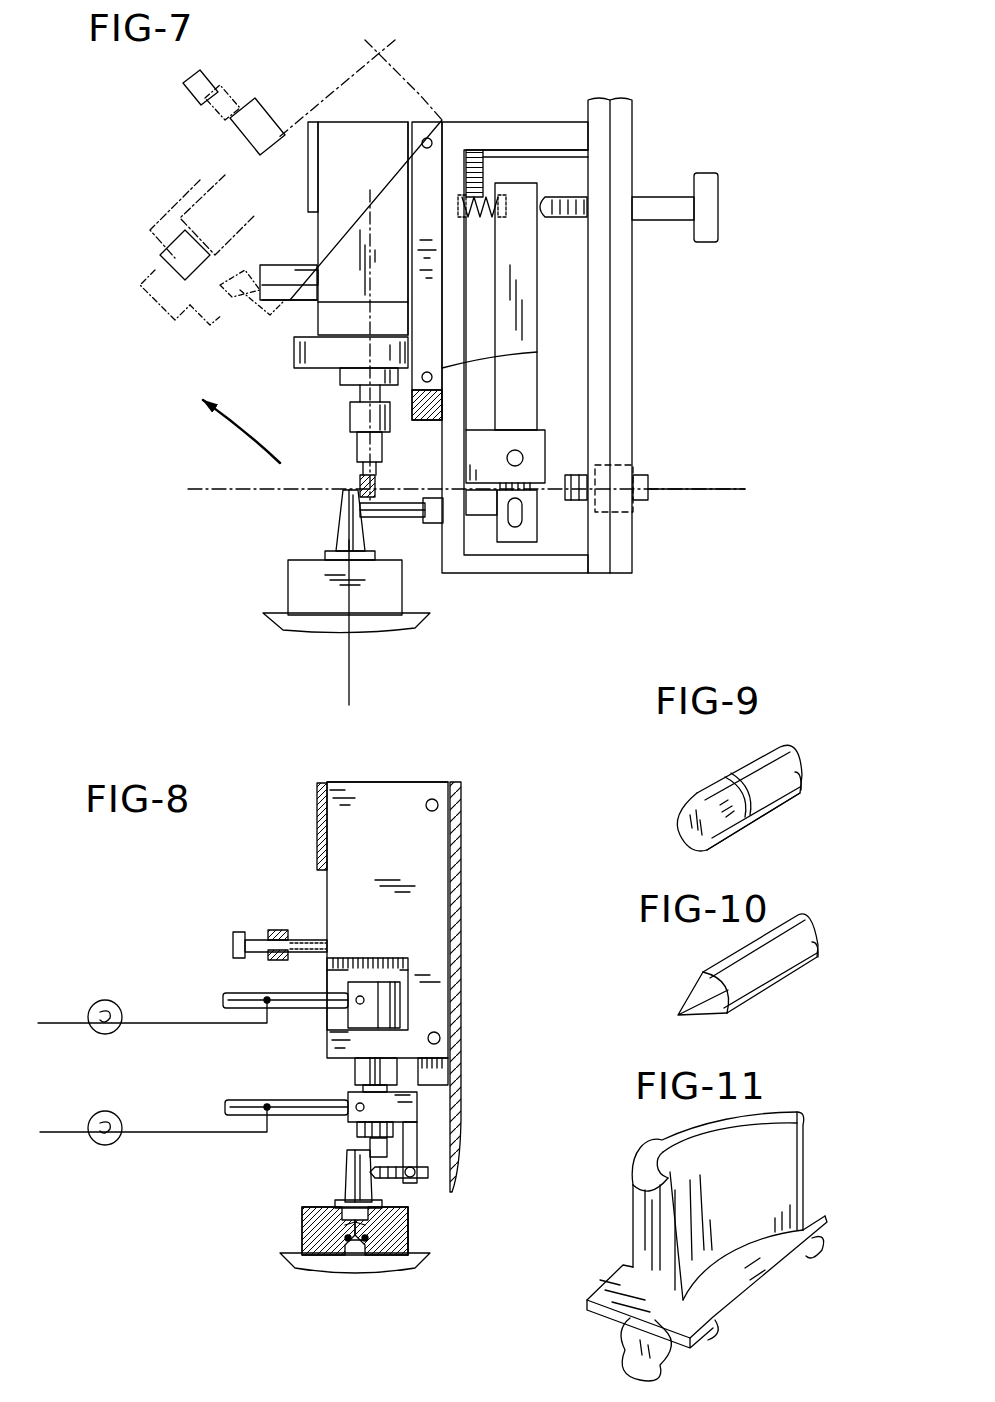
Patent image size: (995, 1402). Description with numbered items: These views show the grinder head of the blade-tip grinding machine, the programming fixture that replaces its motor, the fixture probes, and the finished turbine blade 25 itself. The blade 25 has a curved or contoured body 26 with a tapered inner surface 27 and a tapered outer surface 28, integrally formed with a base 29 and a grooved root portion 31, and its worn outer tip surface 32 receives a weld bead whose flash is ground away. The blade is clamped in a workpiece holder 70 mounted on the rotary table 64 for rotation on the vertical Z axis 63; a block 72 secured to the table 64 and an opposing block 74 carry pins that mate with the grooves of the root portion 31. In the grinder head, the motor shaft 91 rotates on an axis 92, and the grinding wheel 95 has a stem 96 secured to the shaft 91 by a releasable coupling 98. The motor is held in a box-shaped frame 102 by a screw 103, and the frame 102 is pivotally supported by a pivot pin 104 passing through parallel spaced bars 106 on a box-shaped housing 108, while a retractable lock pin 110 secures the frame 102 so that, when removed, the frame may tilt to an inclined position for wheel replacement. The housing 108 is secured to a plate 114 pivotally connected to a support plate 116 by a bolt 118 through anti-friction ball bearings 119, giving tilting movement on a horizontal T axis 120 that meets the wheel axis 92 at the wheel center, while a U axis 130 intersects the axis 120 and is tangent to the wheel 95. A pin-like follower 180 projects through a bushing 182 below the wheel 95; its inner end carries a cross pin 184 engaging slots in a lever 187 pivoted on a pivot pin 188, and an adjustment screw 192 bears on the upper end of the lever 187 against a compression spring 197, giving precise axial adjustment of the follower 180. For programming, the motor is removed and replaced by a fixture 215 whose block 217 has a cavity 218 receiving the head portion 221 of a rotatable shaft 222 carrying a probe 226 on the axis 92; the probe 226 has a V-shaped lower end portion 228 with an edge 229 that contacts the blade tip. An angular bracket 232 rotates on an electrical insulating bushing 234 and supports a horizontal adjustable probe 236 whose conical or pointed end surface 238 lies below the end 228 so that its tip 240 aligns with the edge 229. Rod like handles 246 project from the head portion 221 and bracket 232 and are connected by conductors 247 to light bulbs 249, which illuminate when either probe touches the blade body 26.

In FIG. 7, the high pressure gas turbine blade 25 is at (335, 518).
In FIG. 8, the high pressure gas turbine blade 25 is at (340, 1172).
In FIG. 11, the high pressure gas turbine blade 25 is at (740, 1310).
In FIG. 11, the curved or contoured body 26 is at (812, 1140).
In FIG. 11, the tapered inner surface 27 is at (780, 1172).
In FIG. 11, the tapered outer surface 28 is at (635, 1213).
In FIG. 11, the base 29 is at (755, 1262).
In FIG. 8, the grooved root portion 31 is at (356, 1262).
In FIG. 11, the grooved root portion 31 is at (625, 1345).
In FIG. 11, the outer tip surface 32 is at (652, 1146).
In FIG. 7, the vertical Z axis 63 is at (352, 688).
In FIG. 7, the rotary table 64 is at (285, 630).
In FIG. 8, the rotary table 64 is at (300, 1265).
In FIG. 7, the workpiece holder 70 is at (285, 588).
In FIG. 8, the block 72 is at (300, 1215).
In FIG. 8, the opposing block 74 is at (410, 1258).
In FIG. 7, the shaft 91 is at (360, 393).
In FIG. 7, the axis of rotation 92 is at (390, 278).
In FIG. 7, the grinding wheel 95 is at (150, 345).
In FIG. 7, the stem 96 is at (358, 455).
In FIG. 7, the releasable coupling 98 is at (195, 280).
In FIG. 7, the box-shaped housing or frame 102 is at (276, 130).
In FIG. 8, the box-shaped housing or frame 102 is at (317, 805).
In FIG. 7, the screw 103 is at (175, 92).
In FIG. 8, the screw 103 is at (255, 935).
In FIG. 7, the pivot pin 104 is at (430, 128).
In FIG. 8, the pivot pin 104 is at (436, 800).
In FIG. 7, the parallel spaced bars 106 is at (410, 185).
In FIG. 7, the box-shaped housing 108 is at (548, 128).
In FIG. 8, the box-shaped housing 108 is at (460, 835).
In FIG. 7, the retractable lock pin 110 is at (433, 375).
In FIG. 8, the retractable lock pin 110 is at (440, 1038).
In FIG. 7, the plate 114 is at (600, 288).
In FIG. 7, the support plate 116 is at (618, 345).
In FIG. 7, the bolt 118 is at (648, 480).
In FIG. 7, the anti-friction ball bearings 119 is at (630, 440).
In FIG. 7, the horizontal T axis 120 is at (702, 495).
In FIG. 7, the U axis 130 is at (360, 483).
In FIG. 7, the pin-like follower 180 is at (397, 520).
In FIG. 7, the bushing 182 is at (440, 530).
In FIG. 7, the cross pin 184 is at (520, 513).
In FIG. 7, the lever 187 is at (530, 297).
In FIG. 7, the pivot pin 188 is at (518, 458).
In FIG. 7, the adjustment screw 192 is at (660, 197).
In FIG. 7, the compression spring 197 is at (478, 192).
In FIG. 8, the fixture 215 is at (420, 775).
In FIG. 8, the block 217 is at (435, 868).
In FIG. 8, the cavity 218 is at (380, 960).
In FIG. 8, the head portion 221 is at (398, 1000).
In FIG. 8, the shaft 222 is at (352, 1072).
In FIG. 9, the probe 226 is at (780, 760).
In FIG. 8, the V-shaped lower end portion 228 is at (410, 1118).
In FIG. 9, the V-shaped lower end portion 228 is at (730, 817).
In FIG. 9, the edge 229 is at (710, 785).
In FIG. 8, the angular bracket 232 is at (440, 1100).
In FIG. 8, the electrical insulating bushing 234 is at (355, 1130).
In FIG. 8, the adjustable probe 236 is at (395, 1180).
In FIG. 10, the adjustable probe 236 is at (800, 930).
In FIG. 10, the conical or pointed end surface 238 is at (700, 975).
In FIG. 10, the tip 240 is at (672, 1013).
In FIG. 8, the rod like handles 246 is at (240, 990).
In FIG. 8, the conductors 247 is at (145, 1020).
In FIG. 8, the light bulbs 249 is at (105, 1112).